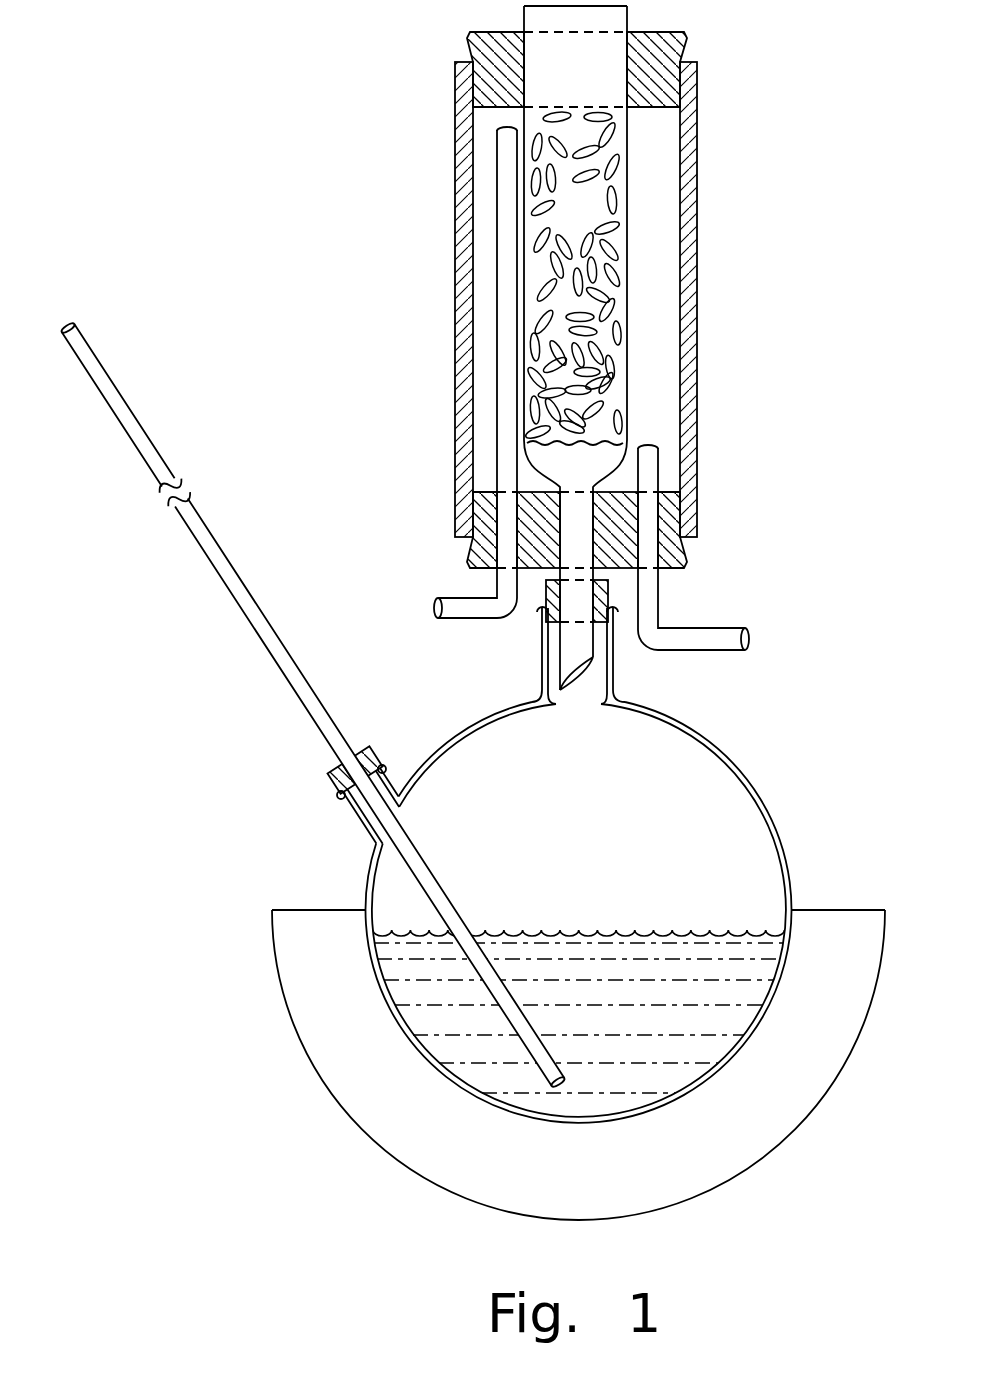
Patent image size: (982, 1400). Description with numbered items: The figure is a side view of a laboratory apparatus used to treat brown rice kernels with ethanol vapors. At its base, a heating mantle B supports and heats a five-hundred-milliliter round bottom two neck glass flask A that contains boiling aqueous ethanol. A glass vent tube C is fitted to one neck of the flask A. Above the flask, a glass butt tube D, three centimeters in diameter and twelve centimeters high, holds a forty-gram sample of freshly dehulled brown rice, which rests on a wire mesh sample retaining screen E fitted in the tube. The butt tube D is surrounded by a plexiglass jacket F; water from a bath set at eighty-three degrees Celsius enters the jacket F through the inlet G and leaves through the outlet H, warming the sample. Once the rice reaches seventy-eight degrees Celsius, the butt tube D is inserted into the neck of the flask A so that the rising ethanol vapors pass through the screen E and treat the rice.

The round bottom two neck glass flask A is at (558, 864).
The heating mantle B is at (555, 1191).
The glass vent tube C is at (122, 428).
The glass butt tube D is at (566, 218).
The wire mesh sample retaining screen E is at (607, 437).
The plexiglass jacket F is at (448, 208).
The inlet G is at (772, 639).
The outlet H is at (433, 608).